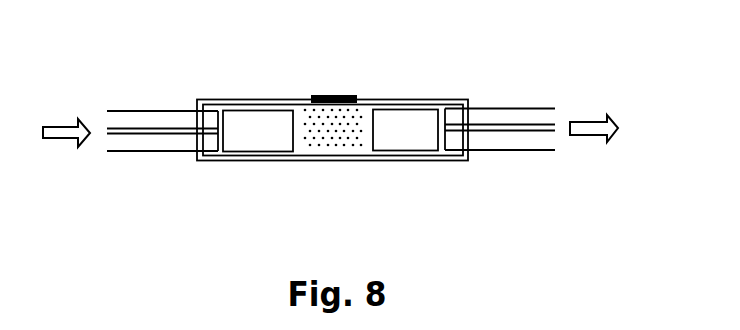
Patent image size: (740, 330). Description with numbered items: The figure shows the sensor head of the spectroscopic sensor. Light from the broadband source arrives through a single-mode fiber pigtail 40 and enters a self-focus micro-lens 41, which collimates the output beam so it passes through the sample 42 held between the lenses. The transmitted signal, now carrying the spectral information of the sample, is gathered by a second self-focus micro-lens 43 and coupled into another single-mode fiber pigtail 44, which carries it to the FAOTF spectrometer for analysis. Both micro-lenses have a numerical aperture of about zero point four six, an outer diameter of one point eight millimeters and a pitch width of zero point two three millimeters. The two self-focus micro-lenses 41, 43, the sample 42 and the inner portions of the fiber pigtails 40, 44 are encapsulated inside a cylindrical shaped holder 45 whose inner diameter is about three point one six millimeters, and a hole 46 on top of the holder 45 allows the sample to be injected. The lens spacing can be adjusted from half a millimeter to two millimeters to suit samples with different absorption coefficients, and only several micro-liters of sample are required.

The single-mode fiber pigtail 40 is at (162, 110).
The self-focus micro-lens 41 is at (255, 108).
The sample 42 is at (336, 152).
The self-focus micro-lens 43 is at (422, 103).
The single-mode fiber pigtail 44 is at (513, 108).
The cylindrical shaped holder 45 is at (400, 161).
The hole 46 is at (337, 97).